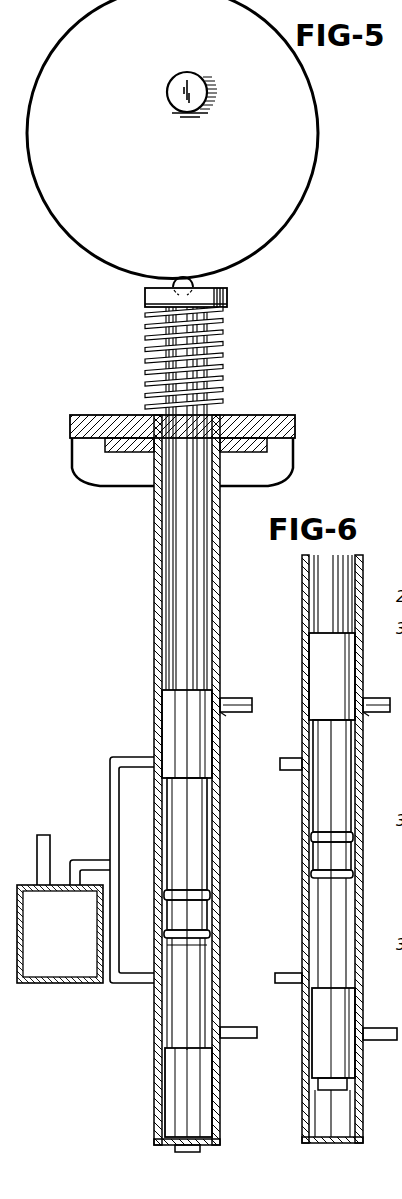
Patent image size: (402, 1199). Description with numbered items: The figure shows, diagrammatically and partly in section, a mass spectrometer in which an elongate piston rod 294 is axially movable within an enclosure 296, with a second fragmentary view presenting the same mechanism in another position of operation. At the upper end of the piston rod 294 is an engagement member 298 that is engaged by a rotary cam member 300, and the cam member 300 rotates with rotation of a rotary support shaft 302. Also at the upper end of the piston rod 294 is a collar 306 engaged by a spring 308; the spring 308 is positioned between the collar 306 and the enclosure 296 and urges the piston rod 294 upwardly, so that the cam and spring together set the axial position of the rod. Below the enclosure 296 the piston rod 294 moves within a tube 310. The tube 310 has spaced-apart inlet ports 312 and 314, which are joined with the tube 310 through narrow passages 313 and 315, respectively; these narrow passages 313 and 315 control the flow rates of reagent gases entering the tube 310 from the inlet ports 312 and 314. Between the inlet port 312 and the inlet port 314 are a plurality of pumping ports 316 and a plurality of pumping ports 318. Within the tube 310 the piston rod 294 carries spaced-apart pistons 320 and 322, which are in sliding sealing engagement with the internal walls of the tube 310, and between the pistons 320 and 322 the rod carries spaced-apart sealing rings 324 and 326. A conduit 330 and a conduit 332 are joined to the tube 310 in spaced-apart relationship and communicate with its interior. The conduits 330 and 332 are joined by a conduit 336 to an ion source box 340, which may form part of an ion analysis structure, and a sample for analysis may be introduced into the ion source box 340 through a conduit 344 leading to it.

In FIG. 5, the piston rod 294 is at (174, 503).
In FIG. 6, the piston rod 294 is at (324, 592).
In FIG. 5, the enclosure 296 is at (257, 418).
In FIG. 5, the engagement member 298 is at (184, 276).
In FIG. 5, the rotary cam member 300 is at (303, 186).
In FIG. 5, the rotary support shaft 302 is at (175, 78).
In FIG. 5, the collar 306 is at (143, 297).
In FIG. 5, the spring 308 is at (148, 352).
In FIG. 5, the tube 310 is at (156, 578).
In FIG. 6, the tube 310 is at (302, 577).
In FIG. 5, the inlet port 312 is at (258, 699).
In FIG. 6, the inlet port 312 is at (390, 698).
In FIG. 5, the narrow passage 313 is at (222, 711).
In FIG. 6, the narrow passage 313 is at (370, 711).
In FIG. 5, the inlet port 314 is at (237, 1039).
In FIG. 6, the inlet port 314 is at (388, 1040).
In FIG. 5, the narrow passage 315 is at (238, 1013).
In FIG. 6, the narrow passage 315 is at (370, 1028).
In FIG. 5, the pumping ports 316 is at (162, 822).
In FIG. 6, the pumping ports 316 is at (303, 822).
In FIG. 5, the pumping ports 318 is at (161, 912).
In FIG. 6, the pumping ports 318 is at (305, 912).
In FIG. 5, the piston 320 is at (166, 707).
In FIG. 6, the piston 320 is at (316, 645).
In FIG. 5, the piston 322 is at (177, 1076).
In FIG. 6, the piston 322 is at (318, 1010).
In FIG. 5, the sealing ring 324 is at (207, 893).
In FIG. 6, the sealing ring 324 is at (312, 841).
In FIG. 5, the sealing ring 326 is at (216, 941).
In FIG. 5, the conduit 330 is at (133, 757).
In FIG. 6, the conduit 330 is at (287, 758).
In FIG. 5, the conduit 332 is at (128, 985).
In FIG. 6, the conduit 332 is at (280, 975).
In FIG. 5, the conduit 336 is at (86, 860).
In FIG. 5, the ion source box 340 is at (72, 940).
In FIG. 5, the conduit 344 is at (44, 835).